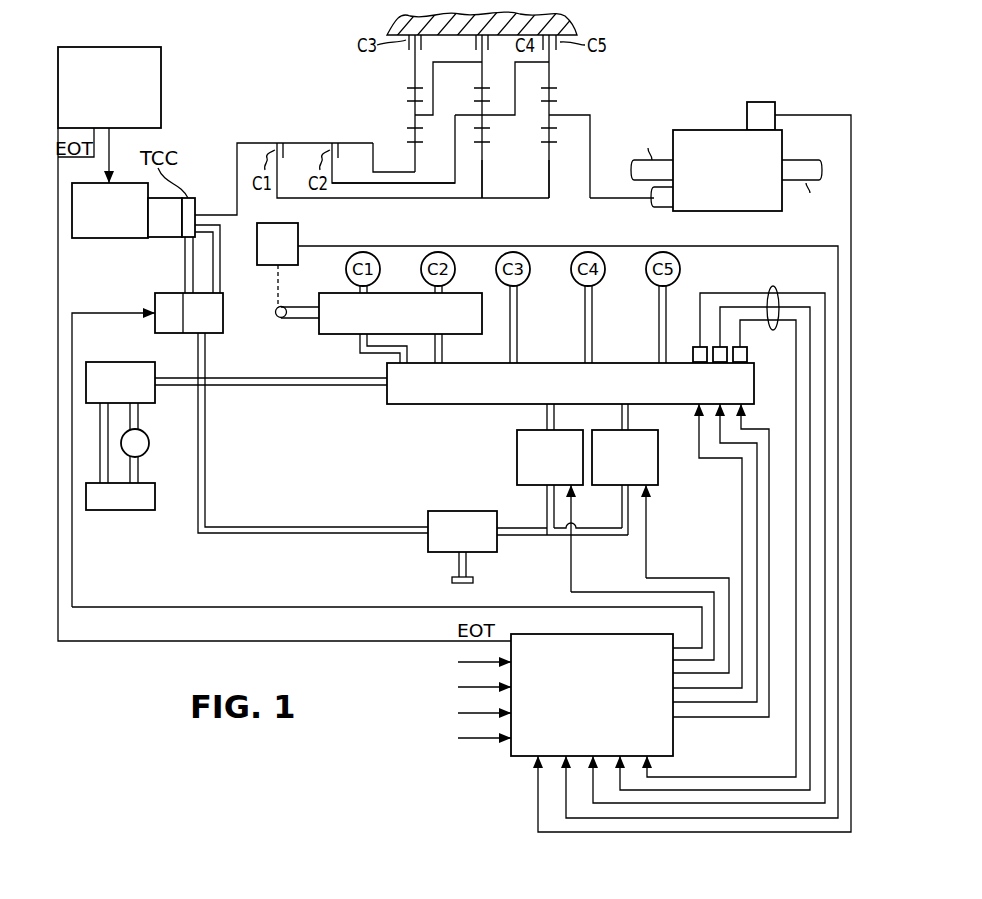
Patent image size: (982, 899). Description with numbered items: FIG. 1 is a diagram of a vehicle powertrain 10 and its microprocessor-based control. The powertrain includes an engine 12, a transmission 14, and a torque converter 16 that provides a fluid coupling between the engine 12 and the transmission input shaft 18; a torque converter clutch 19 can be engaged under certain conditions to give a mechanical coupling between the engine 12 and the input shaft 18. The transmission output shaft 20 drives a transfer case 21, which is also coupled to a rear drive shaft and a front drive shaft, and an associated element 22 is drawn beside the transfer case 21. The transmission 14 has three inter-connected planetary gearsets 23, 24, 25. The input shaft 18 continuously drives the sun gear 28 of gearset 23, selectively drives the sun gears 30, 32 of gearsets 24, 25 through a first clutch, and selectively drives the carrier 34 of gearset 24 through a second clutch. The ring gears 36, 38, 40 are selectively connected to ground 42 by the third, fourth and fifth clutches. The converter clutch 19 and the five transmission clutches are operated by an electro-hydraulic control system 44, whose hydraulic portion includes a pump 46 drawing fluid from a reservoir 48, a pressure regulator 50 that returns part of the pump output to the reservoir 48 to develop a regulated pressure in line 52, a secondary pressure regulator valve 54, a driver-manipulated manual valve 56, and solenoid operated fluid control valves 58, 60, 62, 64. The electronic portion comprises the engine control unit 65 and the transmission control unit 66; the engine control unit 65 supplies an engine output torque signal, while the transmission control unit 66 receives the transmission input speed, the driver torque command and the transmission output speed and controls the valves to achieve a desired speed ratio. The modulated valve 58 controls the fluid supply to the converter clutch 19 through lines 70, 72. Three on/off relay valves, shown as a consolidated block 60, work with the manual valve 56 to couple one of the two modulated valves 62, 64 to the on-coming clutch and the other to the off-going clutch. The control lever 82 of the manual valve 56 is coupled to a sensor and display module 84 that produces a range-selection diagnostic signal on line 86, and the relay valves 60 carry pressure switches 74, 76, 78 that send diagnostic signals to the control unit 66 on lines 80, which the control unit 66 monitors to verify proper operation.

The vehicle powertrain 10 is at (265, 88).
The engine 12 is at (97, 238).
The transmission 14 is at (384, 109).
The torque converter 16 is at (160, 237).
The transmission input shaft 18 is at (234, 154).
The torque converter clutch 19 is at (195, 205).
The transmission output shaft 20 is at (597, 196).
The transfer case 21 is at (712, 128).
The transfer case shift actuator 22 is at (775, 107).
The planetary gearset 23 is at (428, 122).
The planetary gearset 24 is at (494, 122).
The planetary gearset 25 is at (561, 106).
The sun gear 28 is at (412, 167).
The sun gear 30 is at (485, 191).
The sun gear 32 is at (551, 191).
The carrier 34 is at (462, 112).
The ring gear 36 is at (407, 60).
The ring gear 38 is at (476, 43).
The ring gear 40 is at (553, 50).
The ground 42 is at (577, 24).
The electro-hydraulic control system 44 is at (872, 282).
The pump 46 is at (149, 440).
The reservoir 48 is at (155, 500).
The pressure regulator 50 is at (122, 362).
The line 52 is at (295, 387).
The secondary pressure regulator valve 54 is at (428, 547).
The manual valve 56 is at (349, 334).
The solenoid operated fluid control valve 58 is at (223, 322).
The relay valves 60 is at (403, 404).
The modulated valve 62 is at (517, 478).
The modulated valve 64 is at (658, 475).
The engine control unit 65 is at (161, 89).
The transmission control unit 66 is at (527, 756).
The line 70 is at (185, 281).
The line 72 is at (220, 268).
The pressure switch 74 is at (697, 347).
The pressure switch 76 is at (727, 362).
The pressure switch 78 is at (747, 354).
The lines 80 is at (775, 288).
The control lever 82 is at (298, 320).
The sensor and display module 84 is at (298, 231).
The line 86 is at (719, 246).